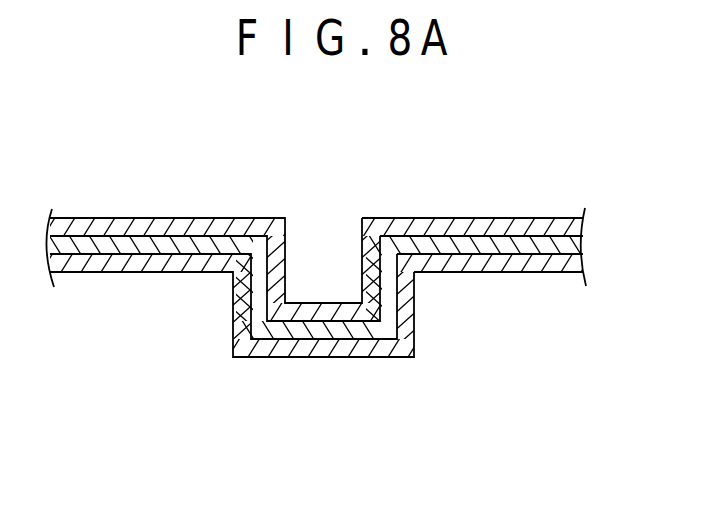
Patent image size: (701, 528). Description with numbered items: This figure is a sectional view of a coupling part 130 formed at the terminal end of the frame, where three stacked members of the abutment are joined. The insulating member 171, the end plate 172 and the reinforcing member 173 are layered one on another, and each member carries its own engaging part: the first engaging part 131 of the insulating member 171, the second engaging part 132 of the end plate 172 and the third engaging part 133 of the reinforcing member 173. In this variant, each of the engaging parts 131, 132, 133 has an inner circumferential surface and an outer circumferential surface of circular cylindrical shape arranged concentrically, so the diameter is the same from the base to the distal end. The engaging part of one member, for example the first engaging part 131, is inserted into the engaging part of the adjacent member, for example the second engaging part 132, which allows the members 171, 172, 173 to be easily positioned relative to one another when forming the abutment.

The coupling part 130 is at (350, 312).
The first engaging part 131 is at (306, 320).
The second engaging part 132 is at (330, 338).
The third engaging part 133 is at (362, 357).
The insulating member 171 is at (532, 218).
The end plate 172 is at (558, 236).
The reinforcing member 173 is at (532, 272).